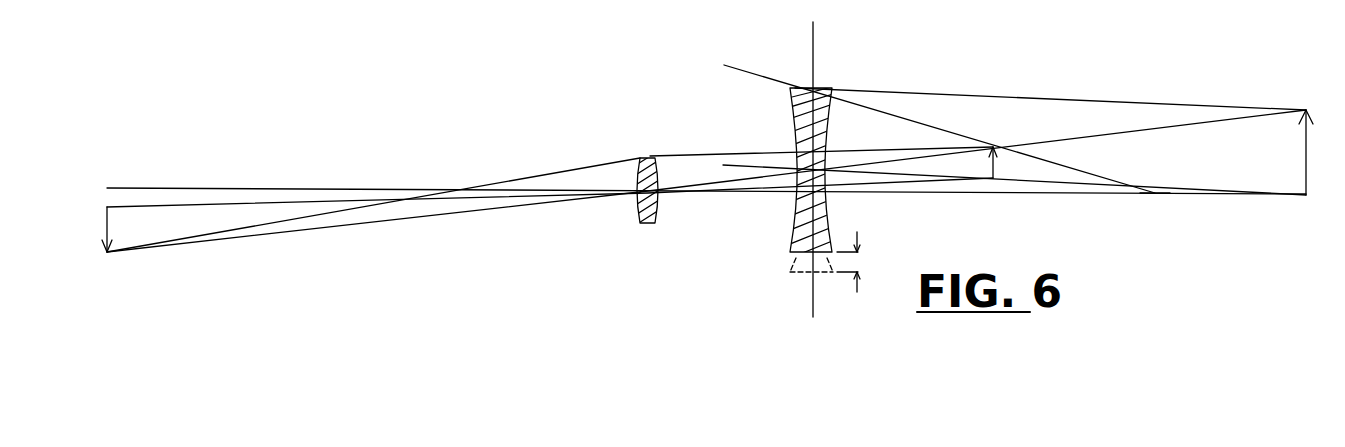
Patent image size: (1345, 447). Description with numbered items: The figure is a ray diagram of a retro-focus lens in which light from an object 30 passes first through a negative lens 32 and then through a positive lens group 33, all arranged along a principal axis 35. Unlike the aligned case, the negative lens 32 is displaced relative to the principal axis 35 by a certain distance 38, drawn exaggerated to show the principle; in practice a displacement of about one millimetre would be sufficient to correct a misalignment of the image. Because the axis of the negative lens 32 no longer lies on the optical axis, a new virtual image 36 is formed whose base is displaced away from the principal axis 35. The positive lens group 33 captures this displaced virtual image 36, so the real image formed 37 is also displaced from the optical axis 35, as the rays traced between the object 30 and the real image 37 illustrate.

The object 30 is at (1306, 160).
The negative lens 32 is at (818, 86).
The positive lens group 33 is at (643, 158).
The principal axis 35 is at (1163, 192).
The virtual image 36 is at (995, 172).
The real image formed 37 is at (105, 228).
The distance 38 is at (857, 254).